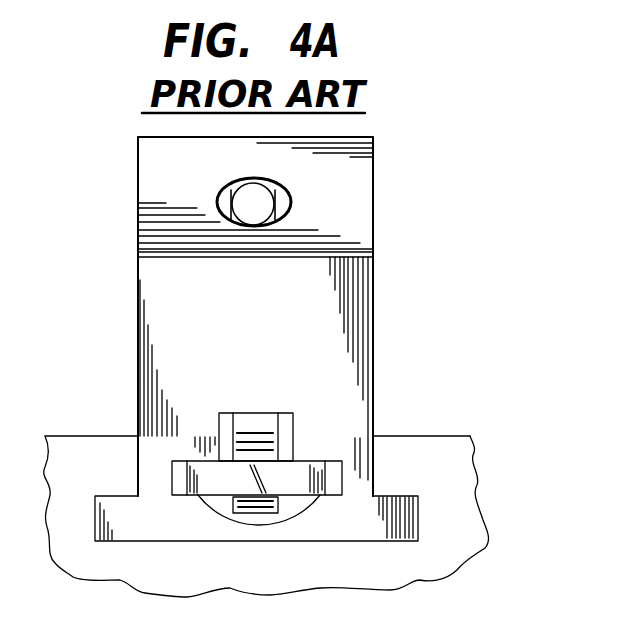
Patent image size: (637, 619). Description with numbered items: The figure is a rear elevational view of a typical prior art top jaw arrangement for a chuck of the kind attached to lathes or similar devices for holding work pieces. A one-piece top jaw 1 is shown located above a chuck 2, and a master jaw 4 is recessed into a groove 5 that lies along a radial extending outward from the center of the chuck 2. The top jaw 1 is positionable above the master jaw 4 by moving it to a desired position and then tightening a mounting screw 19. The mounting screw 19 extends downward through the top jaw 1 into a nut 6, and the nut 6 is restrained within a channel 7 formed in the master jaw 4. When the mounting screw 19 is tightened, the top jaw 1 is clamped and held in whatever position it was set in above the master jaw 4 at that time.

The top jaw 1 is at (385, 305).
The chuck 2 is at (103, 565).
The master jaw 4 is at (182, 527).
The groove 5 is at (375, 467).
The nut 6 is at (297, 487).
The channel 7 is at (219, 418).
The mounting screw 19 is at (263, 208).